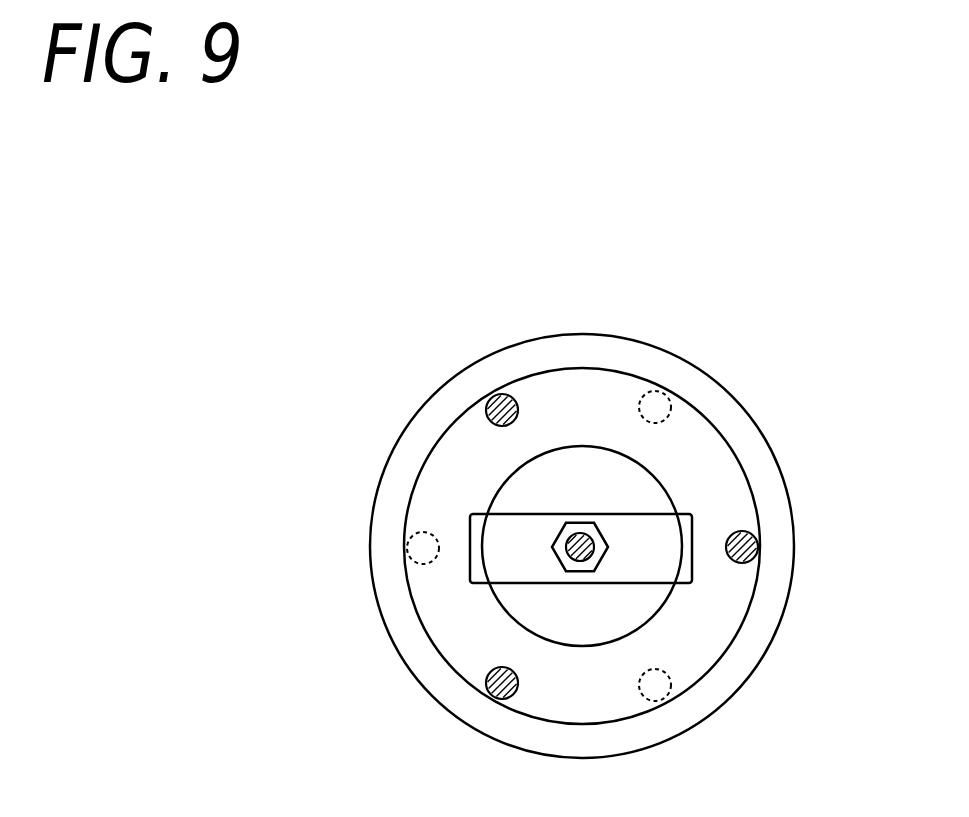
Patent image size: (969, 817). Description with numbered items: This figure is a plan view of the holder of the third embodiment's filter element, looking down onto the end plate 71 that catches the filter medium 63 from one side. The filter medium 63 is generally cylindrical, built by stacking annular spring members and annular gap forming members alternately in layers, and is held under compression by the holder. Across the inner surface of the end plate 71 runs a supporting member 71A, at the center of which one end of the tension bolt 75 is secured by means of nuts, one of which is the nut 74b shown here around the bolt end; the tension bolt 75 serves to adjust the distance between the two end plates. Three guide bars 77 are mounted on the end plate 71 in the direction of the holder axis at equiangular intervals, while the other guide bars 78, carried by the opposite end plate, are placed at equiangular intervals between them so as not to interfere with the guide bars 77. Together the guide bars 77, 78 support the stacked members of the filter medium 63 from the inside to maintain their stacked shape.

The filter medium 63 is at (792, 495).
The end plate 71 is at (728, 457).
The supporting member 71A is at (482, 565).
The tension bolt 75 is at (607, 548).
The nut 74b is at (583, 548).
The guide bars 77 is at (499, 404).
The guide bars 78 is at (670, 406).